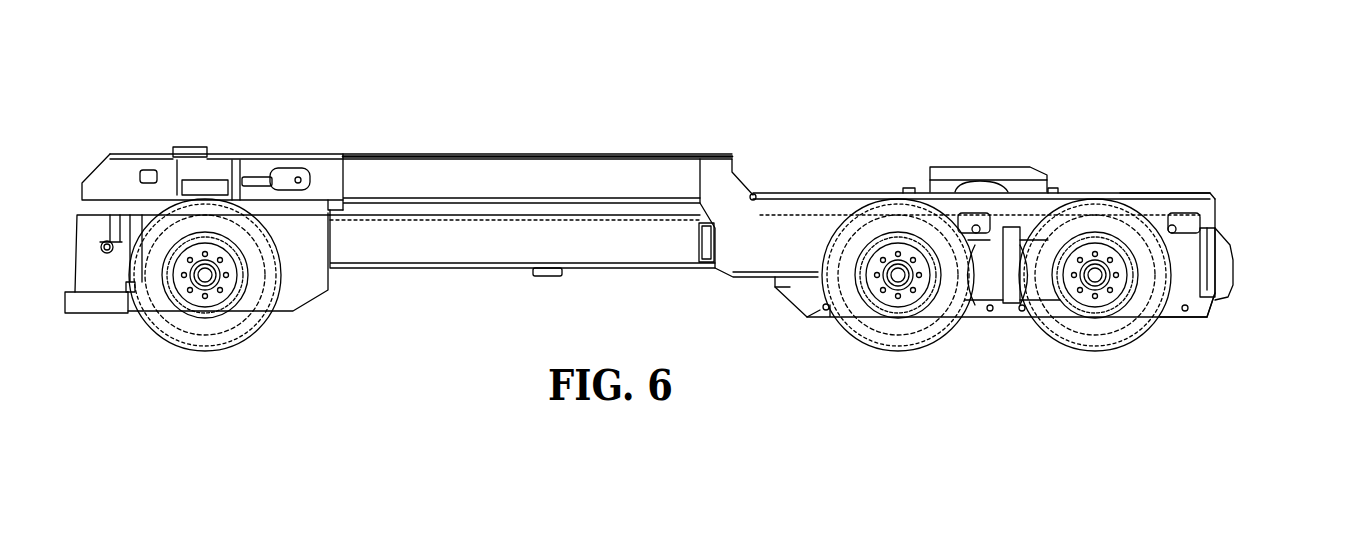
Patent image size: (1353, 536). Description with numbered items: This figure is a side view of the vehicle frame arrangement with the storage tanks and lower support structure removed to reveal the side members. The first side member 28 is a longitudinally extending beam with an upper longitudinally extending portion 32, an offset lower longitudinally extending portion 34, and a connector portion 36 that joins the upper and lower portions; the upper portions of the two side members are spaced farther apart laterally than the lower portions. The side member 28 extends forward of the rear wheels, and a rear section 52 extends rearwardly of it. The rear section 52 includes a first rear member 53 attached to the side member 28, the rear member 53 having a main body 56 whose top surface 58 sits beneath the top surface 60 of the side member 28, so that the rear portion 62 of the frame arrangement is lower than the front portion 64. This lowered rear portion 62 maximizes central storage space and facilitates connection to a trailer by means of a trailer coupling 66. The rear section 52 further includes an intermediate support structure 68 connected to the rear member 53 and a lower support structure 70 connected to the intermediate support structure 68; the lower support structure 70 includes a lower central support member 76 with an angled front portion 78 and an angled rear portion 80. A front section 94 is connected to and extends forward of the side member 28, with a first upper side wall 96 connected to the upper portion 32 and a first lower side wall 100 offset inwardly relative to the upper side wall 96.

The first side member 28 is at (477, 153).
The upper longitudinally extending portion 32 is at (528, 168).
The lower longitudinally extending portion 34 is at (585, 245).
The connector portion 36 is at (515, 203).
The rear section 52 is at (1252, 176).
The first rear member 53 is at (1155, 193).
The main body 56 is at (878, 185).
The top surface 58 is at (825, 185).
The top surface 60 is at (622, 142).
The rear portion 62 is at (1122, 160).
The front portion 64 is at (357, 105).
The trailer coupling 66 is at (995, 145).
The intermediate support structure 68 is at (1245, 225).
The lower support structure 70 is at (1225, 322).
The lower central support member 76 is at (775, 295).
The angled front portion 78 is at (800, 315).
The angled rear portion 80 is at (1220, 310).
The front section 94 is at (160, 128).
The first upper side wall 96 is at (325, 170).
The first lower side wall 100 is at (300, 248).